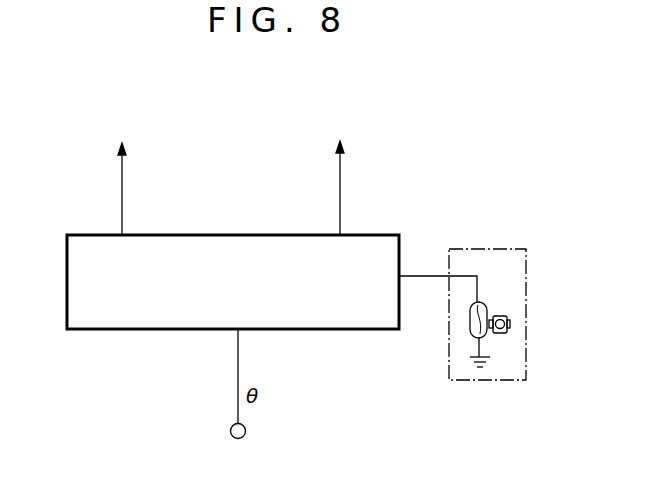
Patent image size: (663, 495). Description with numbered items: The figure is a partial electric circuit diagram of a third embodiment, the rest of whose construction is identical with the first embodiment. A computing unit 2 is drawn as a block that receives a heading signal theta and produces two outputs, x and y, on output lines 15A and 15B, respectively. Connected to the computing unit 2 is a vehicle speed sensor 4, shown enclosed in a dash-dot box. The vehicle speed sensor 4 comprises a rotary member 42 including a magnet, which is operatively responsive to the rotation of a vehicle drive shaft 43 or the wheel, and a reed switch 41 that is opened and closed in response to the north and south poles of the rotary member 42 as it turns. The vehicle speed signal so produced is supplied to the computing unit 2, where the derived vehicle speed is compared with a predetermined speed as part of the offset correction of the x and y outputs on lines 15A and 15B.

The computing unit 2 is at (381, 234).
The vehicle speed sensor 4 is at (508, 249).
The x output 15A is at (342, 173).
The y output 15B is at (120, 174).
The reed switch 41 is at (469, 323).
The rotary member 42 is at (506, 315).
The vehicle drive shaft 43 is at (507, 331).